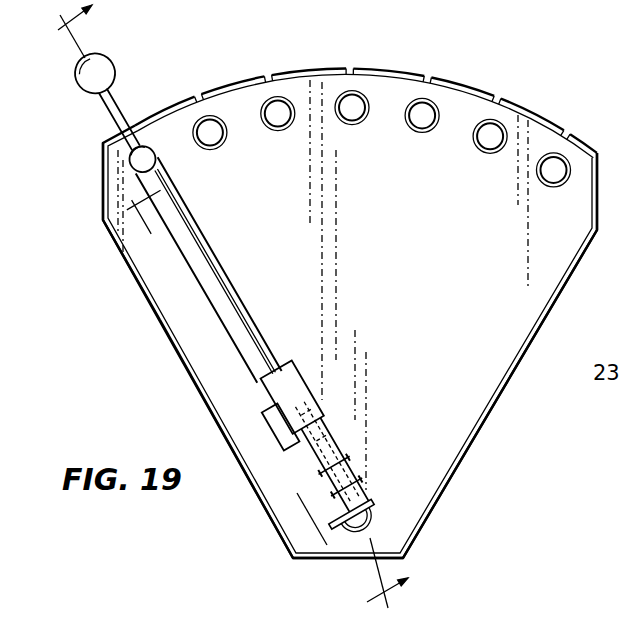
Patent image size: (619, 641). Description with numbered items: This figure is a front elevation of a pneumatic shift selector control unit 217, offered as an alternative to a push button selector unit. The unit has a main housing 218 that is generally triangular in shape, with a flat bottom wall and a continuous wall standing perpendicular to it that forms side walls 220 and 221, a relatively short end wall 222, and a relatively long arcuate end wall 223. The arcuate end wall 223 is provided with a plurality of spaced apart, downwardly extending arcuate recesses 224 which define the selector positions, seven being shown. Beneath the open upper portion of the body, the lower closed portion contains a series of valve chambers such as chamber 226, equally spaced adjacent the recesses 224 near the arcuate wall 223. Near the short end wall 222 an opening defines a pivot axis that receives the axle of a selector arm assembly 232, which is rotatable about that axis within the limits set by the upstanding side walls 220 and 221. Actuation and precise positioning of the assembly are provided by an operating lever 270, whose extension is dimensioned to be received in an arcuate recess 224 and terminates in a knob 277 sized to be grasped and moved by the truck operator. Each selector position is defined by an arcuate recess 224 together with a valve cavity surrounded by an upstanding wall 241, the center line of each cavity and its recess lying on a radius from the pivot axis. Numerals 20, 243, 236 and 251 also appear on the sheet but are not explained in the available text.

The section line 20- 20 is at (224, 317).
The control unit 217 is at (535, 443).
The main housing 218 is at (199, 390).
The side wall 220 is at (158, 318).
The side wall 221 is at (562, 296).
The end wall 222 is at (332, 560).
The arcuate end wall 223 is at (528, 106).
The arcuate recesses 224 is at (275, 71).
The upstanding wall 241 is at (133, 175).
The operating lever 270 is at (187, 197).
The knob 277 is at (116, 78).
The selector arm assembly 232 is at (382, 438).
The adjacent figure element 243 is at (618, 401).
The valve chamber 226 is at (600, 458).
The adjacent figure element 236 is at (618, 467).
The adjacent figure element 251 is at (618, 560).